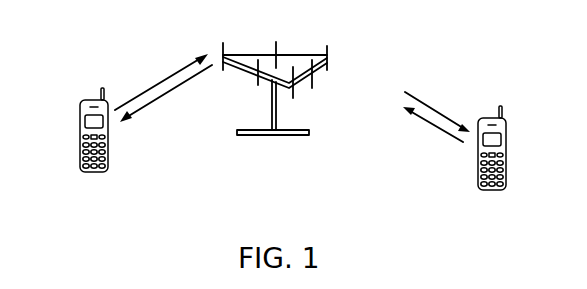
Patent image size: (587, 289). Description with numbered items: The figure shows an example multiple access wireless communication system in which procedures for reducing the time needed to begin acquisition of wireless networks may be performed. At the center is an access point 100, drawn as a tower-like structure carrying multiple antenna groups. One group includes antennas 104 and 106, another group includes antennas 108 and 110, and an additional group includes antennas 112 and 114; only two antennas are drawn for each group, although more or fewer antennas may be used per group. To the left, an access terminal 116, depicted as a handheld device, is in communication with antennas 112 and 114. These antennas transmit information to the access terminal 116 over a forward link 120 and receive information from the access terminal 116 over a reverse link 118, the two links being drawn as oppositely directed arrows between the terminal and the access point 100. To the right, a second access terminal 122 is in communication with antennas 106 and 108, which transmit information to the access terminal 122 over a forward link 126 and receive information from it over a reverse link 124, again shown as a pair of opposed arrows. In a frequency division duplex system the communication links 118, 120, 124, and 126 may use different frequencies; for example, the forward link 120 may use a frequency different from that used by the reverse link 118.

The access point 100 is at (266, 137).
The antenna 104 is at (294, 91).
The antenna 106 is at (313, 80).
The antenna 108 is at (329, 64).
The antenna 110 is at (277, 46).
The antenna 112 is at (221, 46).
The antenna 114 is at (257, 77).
The access terminal 116 is at (80, 118).
The reverse link 118 is at (168, 73).
The forward link 120 is at (157, 103).
The access terminal 122 is at (507, 142).
The reverse link 124 is at (442, 135).
The forward link 126 is at (437, 107).